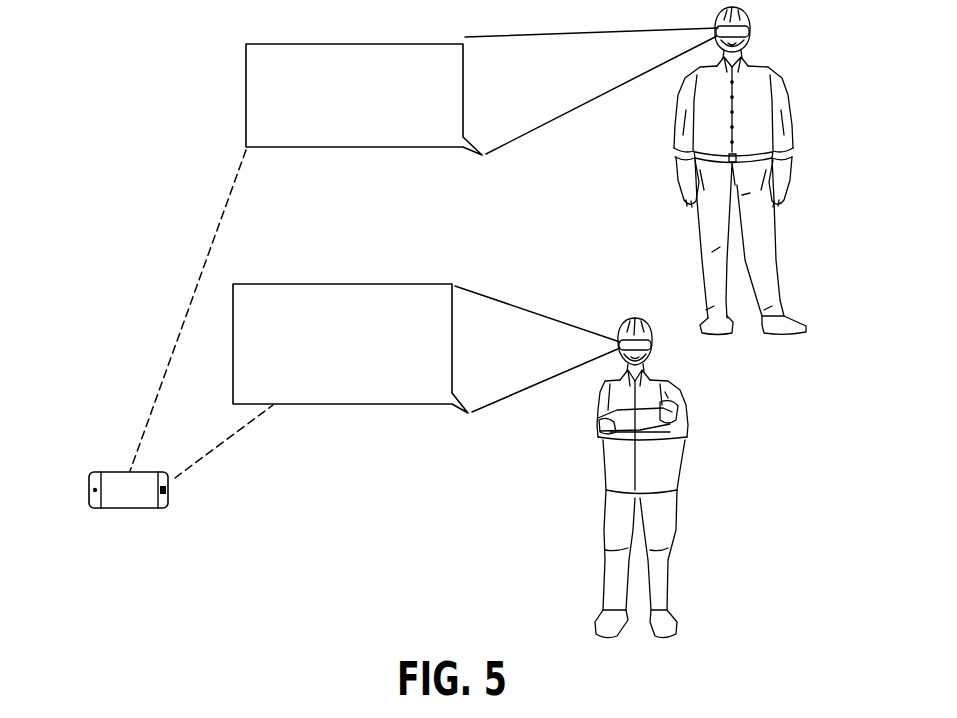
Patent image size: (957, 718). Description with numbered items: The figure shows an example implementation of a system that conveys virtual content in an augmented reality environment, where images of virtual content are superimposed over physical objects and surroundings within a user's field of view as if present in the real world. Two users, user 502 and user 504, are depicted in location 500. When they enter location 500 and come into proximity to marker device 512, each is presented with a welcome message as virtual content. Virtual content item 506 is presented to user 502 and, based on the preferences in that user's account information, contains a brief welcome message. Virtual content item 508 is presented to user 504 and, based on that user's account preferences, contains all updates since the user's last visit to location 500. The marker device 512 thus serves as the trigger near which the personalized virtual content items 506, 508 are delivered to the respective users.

The location 500 is at (92, 566).
The user 502 is at (796, 60).
The user 504 is at (698, 414).
The virtual content item 506 is at (452, 131).
The virtual content item 508 is at (440, 394).
The marker device 512 is at (140, 501).